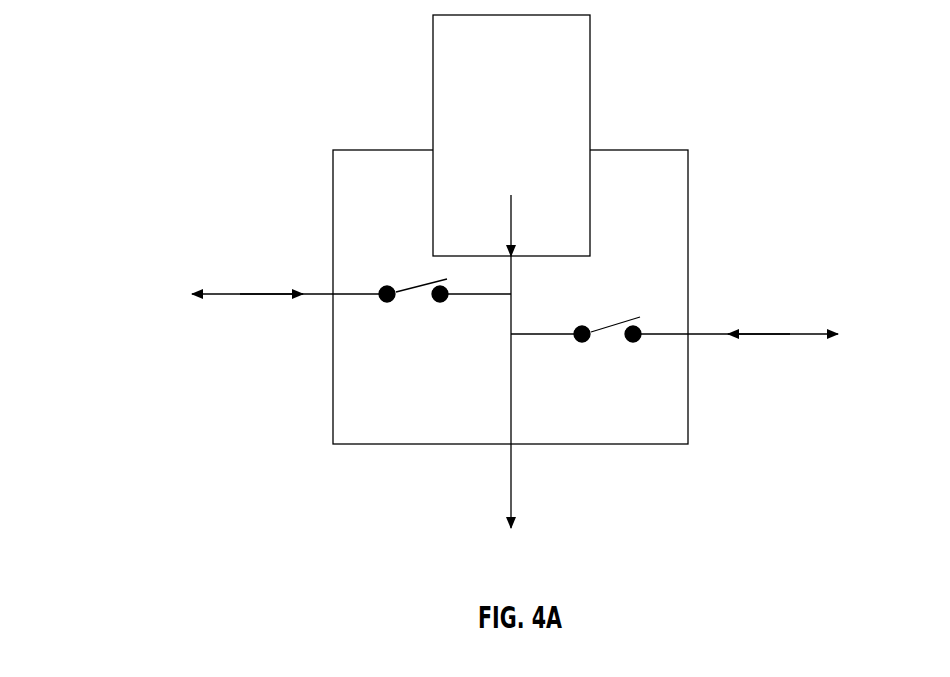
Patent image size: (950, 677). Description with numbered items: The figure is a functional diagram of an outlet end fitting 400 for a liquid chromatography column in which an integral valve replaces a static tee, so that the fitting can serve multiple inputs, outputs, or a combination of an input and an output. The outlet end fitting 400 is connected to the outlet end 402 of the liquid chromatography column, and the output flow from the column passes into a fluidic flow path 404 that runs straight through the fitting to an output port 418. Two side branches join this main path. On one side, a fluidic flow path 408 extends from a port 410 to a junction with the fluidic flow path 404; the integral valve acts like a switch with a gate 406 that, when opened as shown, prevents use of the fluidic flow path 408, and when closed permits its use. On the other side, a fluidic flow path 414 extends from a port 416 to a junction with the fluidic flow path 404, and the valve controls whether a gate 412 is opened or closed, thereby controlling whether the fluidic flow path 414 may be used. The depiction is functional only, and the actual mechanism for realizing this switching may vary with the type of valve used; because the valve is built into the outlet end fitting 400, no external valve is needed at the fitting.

The outlet end fitting 400 is at (332, 423).
The outlet end 402 is at (522, 180).
The fluidic flow path 404 is at (512, 258).
The gate 406 is at (417, 287).
The fluidic flow path 408 is at (360, 294).
The port 410 is at (325, 294).
The gate 412 is at (615, 322).
The fluidic flow path 414 is at (652, 336).
The port 416 is at (690, 334).
The output port 418 is at (512, 447).